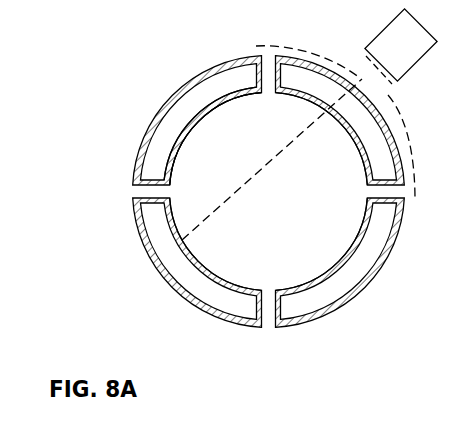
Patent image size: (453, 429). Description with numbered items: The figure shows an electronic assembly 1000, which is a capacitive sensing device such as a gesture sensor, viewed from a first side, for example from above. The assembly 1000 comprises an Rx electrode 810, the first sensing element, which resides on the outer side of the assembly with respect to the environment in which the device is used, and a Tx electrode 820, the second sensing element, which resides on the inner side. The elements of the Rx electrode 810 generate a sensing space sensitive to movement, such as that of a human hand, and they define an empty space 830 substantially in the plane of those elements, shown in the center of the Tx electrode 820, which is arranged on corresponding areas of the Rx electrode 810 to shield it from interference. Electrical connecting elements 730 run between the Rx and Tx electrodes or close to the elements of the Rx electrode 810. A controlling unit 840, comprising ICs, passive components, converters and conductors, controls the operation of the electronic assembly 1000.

The electronic assembly 1000 is at (223, 192).
The Rx electrode 810 is at (194, 120).
The Tx electrode 820 is at (205, 115).
The empty space 830 is at (269, 192).
The electrical connecting elements 730 is at (220, 204).
The controlling unit 840 is at (346, 104).